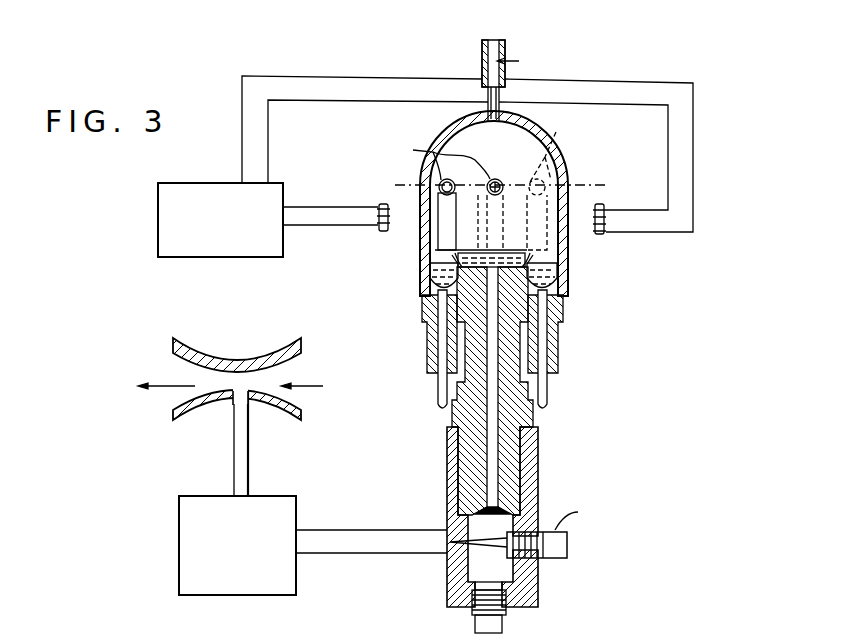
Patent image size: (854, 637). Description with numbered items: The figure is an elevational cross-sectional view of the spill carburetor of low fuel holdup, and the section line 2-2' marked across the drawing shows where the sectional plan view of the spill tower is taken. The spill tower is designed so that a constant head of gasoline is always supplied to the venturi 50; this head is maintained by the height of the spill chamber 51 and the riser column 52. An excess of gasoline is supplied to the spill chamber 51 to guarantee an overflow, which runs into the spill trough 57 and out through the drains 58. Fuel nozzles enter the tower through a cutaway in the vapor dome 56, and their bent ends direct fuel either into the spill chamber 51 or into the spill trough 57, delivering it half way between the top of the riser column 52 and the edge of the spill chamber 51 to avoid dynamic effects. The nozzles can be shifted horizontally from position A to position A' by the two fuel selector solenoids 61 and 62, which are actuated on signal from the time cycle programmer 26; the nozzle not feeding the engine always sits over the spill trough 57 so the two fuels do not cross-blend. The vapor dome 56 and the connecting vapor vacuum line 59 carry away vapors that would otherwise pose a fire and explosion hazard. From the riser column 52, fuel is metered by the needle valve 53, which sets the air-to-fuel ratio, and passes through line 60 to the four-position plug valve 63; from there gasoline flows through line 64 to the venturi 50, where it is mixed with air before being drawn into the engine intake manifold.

The section line 2-2' 2 is at (386, 186).
The time cycle programmer 26 is at (425, 166).
The venturi 50 is at (280, 355).
The spill chamber 51 is at (512, 251).
The riser column 52 is at (490, 422).
The needle valve 53 is at (568, 545).
The vapor dome 56 is at (440, 128).
The spill trough 57 is at (432, 281).
The drains 58 is at (436, 400).
The vapor vacuum line 59 is at (505, 88).
The line 60 is at (384, 530).
The fuel selector solenoid 61 is at (385, 232).
The fuel selector solenoid 62 is at (604, 207).
The 4-position plug valve 63 is at (185, 572).
The line 64 is at (250, 462).